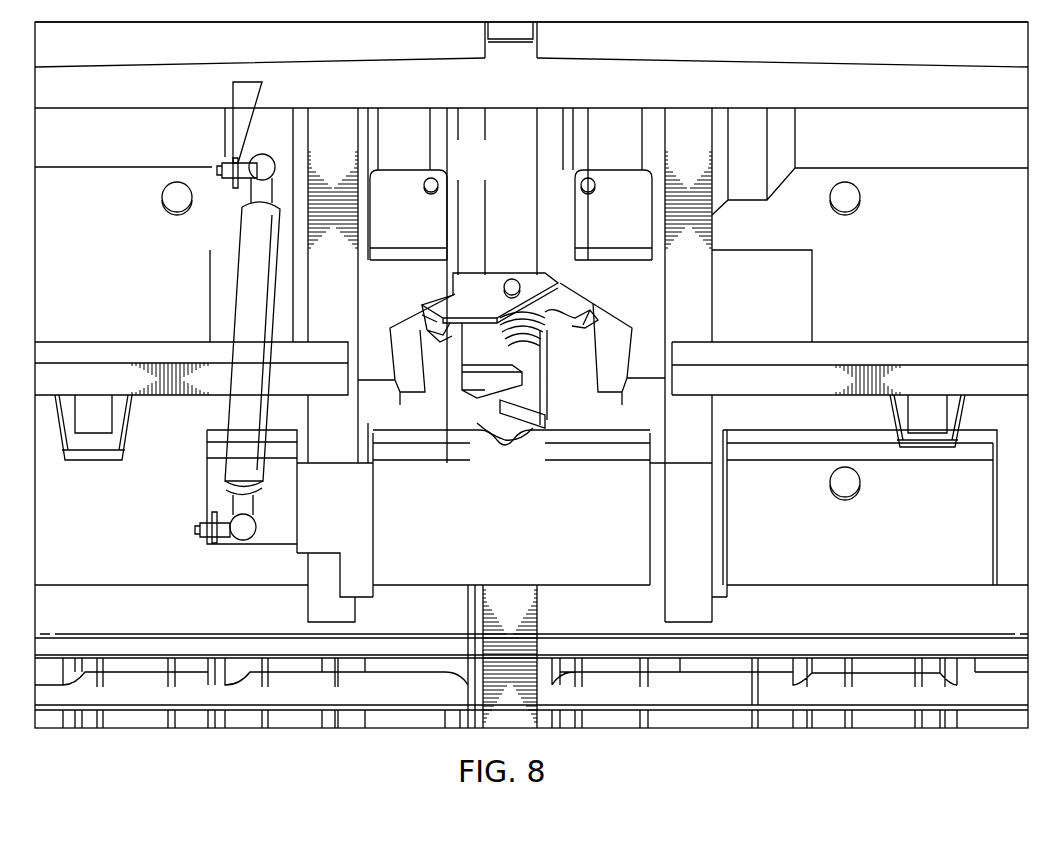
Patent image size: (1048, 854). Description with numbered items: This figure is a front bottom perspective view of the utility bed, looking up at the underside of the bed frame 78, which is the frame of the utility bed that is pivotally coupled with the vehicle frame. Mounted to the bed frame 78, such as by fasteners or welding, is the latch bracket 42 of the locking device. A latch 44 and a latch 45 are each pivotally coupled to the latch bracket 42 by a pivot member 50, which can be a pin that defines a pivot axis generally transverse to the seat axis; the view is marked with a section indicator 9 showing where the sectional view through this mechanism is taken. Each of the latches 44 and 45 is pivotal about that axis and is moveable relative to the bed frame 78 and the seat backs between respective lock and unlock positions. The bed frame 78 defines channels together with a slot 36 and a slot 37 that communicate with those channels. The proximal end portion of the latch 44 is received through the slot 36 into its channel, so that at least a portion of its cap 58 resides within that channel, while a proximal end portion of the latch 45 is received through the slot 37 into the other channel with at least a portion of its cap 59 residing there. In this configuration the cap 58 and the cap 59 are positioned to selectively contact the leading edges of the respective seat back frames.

The bed frame 78 is at (506, 130).
The section line 9- 9 is at (505, 172).
The pivot member 50 is at (511, 280).
The latch bracket 42 is at (493, 284).
The cap 59 is at (427, 327).
The cap 58 is at (580, 313).
The slot 37 is at (432, 413).
The latch 44 is at (475, 377).
The latch 45 is at (537, 403).
The slot 36 is at (587, 417).